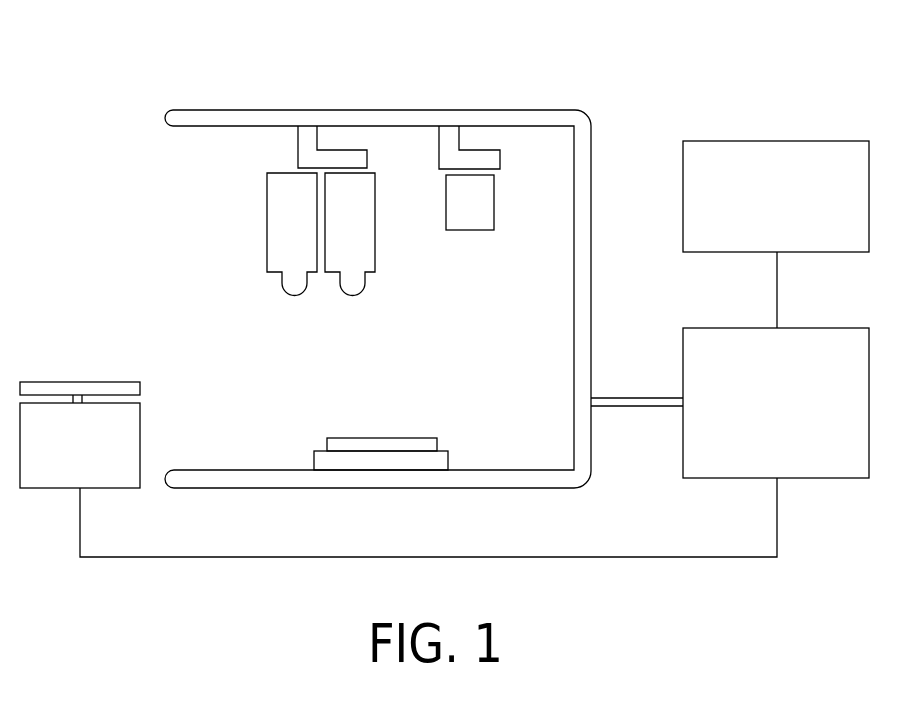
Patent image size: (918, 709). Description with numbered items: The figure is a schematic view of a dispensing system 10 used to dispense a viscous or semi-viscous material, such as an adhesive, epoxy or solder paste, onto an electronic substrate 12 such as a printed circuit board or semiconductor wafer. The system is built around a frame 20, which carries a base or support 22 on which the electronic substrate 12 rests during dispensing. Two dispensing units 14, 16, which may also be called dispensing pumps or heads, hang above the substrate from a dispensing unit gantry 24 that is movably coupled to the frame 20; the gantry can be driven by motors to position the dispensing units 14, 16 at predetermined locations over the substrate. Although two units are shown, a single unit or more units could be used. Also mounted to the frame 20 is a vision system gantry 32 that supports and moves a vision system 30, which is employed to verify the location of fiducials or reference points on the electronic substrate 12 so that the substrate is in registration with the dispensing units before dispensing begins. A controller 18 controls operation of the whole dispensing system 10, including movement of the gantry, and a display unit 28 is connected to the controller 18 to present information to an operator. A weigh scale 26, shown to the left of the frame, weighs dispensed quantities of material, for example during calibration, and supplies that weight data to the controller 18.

The dispensing system 10 is at (647, 90).
The electronic substrate 12 is at (383, 438).
The first dispensing unit 14 is at (280, 285).
The second dispensing unit 16 is at (339, 288).
The controller 18 is at (806, 328).
The frame 20 is at (591, 175).
The support 22 is at (318, 451).
The dispensing unit gantry 24 is at (367, 155).
The weigh scale 26 is at (107, 490).
The display unit 28 is at (808, 141).
The vision system 30 is at (472, 232).
The vision system gantry 32 is at (500, 157).